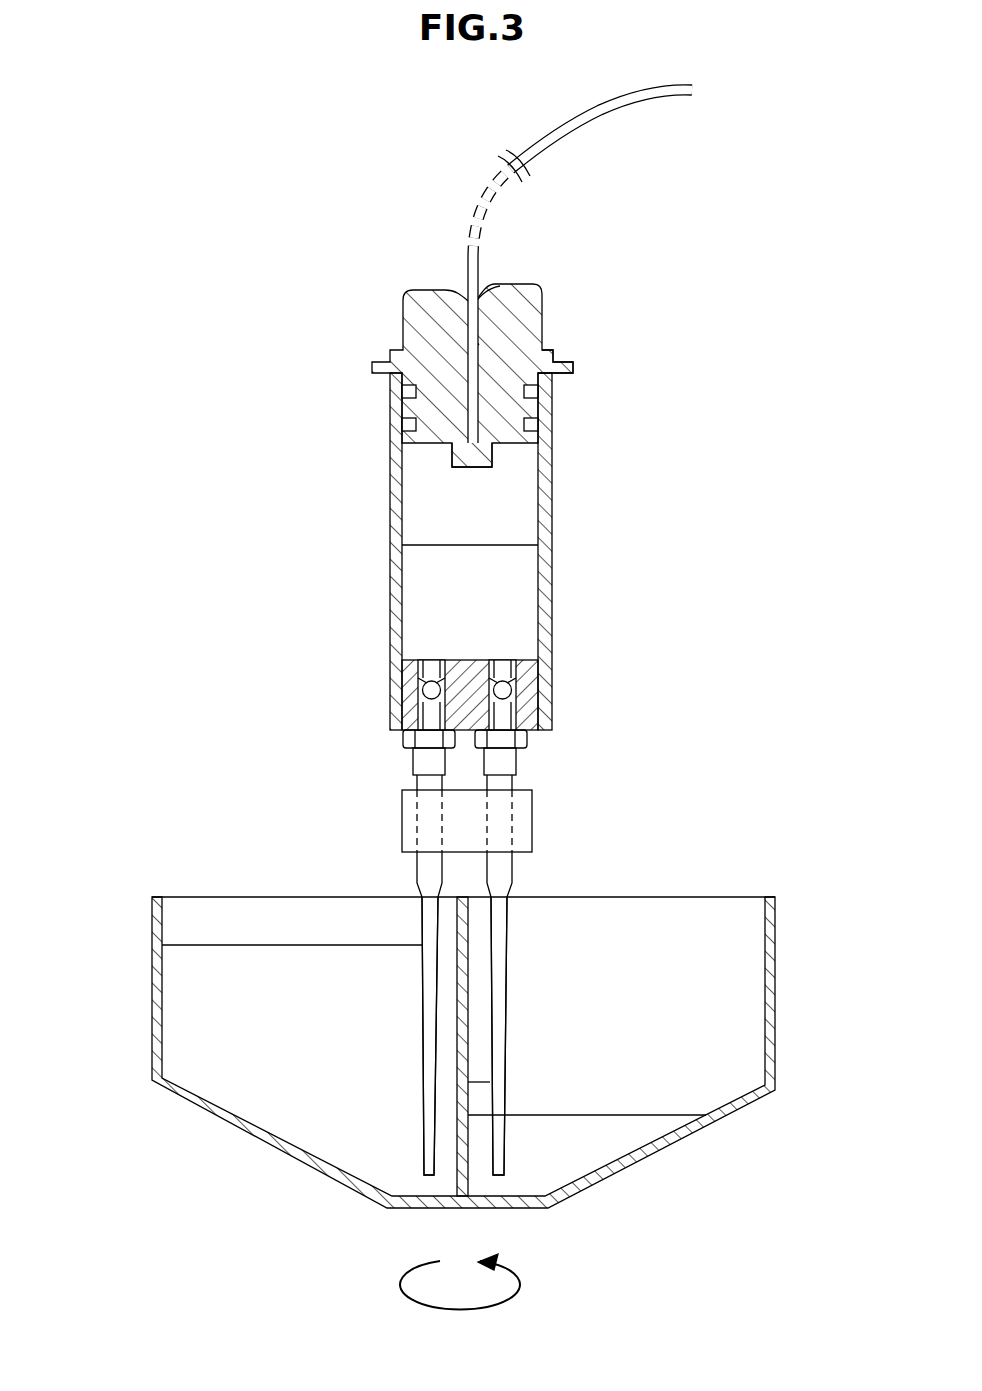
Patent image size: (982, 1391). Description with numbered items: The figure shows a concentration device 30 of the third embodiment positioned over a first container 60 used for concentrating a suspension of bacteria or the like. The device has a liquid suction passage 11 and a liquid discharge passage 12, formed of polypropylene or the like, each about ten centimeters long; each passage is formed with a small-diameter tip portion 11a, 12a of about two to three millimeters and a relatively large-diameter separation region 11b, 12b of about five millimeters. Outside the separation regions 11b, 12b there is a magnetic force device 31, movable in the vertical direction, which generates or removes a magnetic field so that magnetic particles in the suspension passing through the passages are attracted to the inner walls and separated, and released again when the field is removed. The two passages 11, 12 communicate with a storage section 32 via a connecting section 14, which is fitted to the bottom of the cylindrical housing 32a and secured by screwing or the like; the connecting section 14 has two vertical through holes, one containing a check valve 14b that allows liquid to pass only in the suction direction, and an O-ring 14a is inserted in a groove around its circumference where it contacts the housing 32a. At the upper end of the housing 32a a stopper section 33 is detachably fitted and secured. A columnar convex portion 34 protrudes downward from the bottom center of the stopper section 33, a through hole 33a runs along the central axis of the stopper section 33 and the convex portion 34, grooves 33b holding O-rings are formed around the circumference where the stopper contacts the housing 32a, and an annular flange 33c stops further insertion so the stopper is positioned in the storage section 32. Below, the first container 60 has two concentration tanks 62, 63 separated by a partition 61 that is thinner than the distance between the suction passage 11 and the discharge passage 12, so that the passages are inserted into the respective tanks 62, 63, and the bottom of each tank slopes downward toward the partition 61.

The concentration device 30 is at (575, 299).
The stopper section 33 is at (413, 303).
The through hole 33a is at (493, 315).
The grooves 33b is at (538, 392).
The annular flange 33c is at (547, 348).
The columnar convex portion 34 is at (455, 457).
The storage section 32 is at (475, 580).
The cylindrical housing 32a is at (553, 507).
The connecting section 14 is at (402, 718).
The O-ring 14a is at (402, 697).
The check valve 14b is at (548, 707).
The magnetic force device 31 is at (533, 815).
The liquid suction passage 11 is at (410, 1053).
The small-diameter tip portion 11a is at (417, 995).
The separation region 11b is at (420, 872).
The liquid discharge passage 12 is at (520, 1052).
The small-diameter tip portion 12a is at (510, 980).
The separation region 12b is at (503, 868).
The first container 60 is at (775, 985).
The partition 61 is at (493, 1080).
The concentration tank 62 is at (182, 1008).
The concentration tank 63 is at (687, 1068).